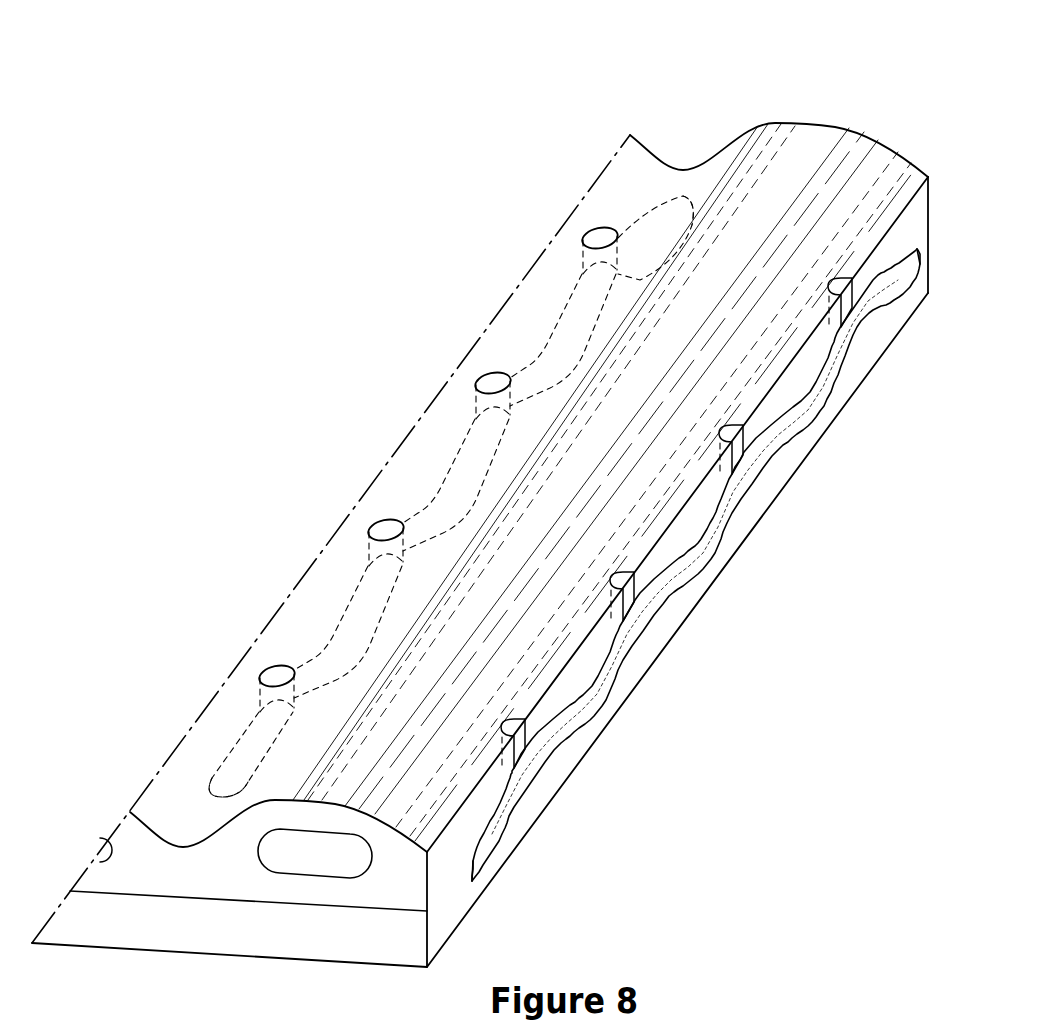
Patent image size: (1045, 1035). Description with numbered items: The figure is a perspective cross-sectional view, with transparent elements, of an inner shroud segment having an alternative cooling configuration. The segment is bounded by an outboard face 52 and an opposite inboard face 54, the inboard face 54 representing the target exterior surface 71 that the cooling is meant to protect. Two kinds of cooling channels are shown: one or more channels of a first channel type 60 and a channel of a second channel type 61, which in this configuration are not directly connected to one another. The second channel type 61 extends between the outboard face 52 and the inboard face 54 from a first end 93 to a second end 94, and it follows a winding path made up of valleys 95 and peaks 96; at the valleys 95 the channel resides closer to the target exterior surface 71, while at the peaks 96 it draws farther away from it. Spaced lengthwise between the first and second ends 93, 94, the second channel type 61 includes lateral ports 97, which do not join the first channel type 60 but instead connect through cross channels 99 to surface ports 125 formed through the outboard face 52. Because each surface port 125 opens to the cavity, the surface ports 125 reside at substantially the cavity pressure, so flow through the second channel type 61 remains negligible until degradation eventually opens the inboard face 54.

The outboard face 52 is at (763, 127).
The inboard face 54 is at (524, 835).
The first channel type 60 is at (738, 297).
The second channel type 61 is at (447, 460).
The target exterior surface 71 is at (672, 633).
The first end 93 is at (237, 792).
The second end 94 is at (684, 197).
The valleys 95 is at (727, 480).
The peaks 96 is at (803, 427).
The lateral ports 97 is at (513, 758).
The cross channels 99 is at (258, 687).
The surface ports 125 is at (496, 374).